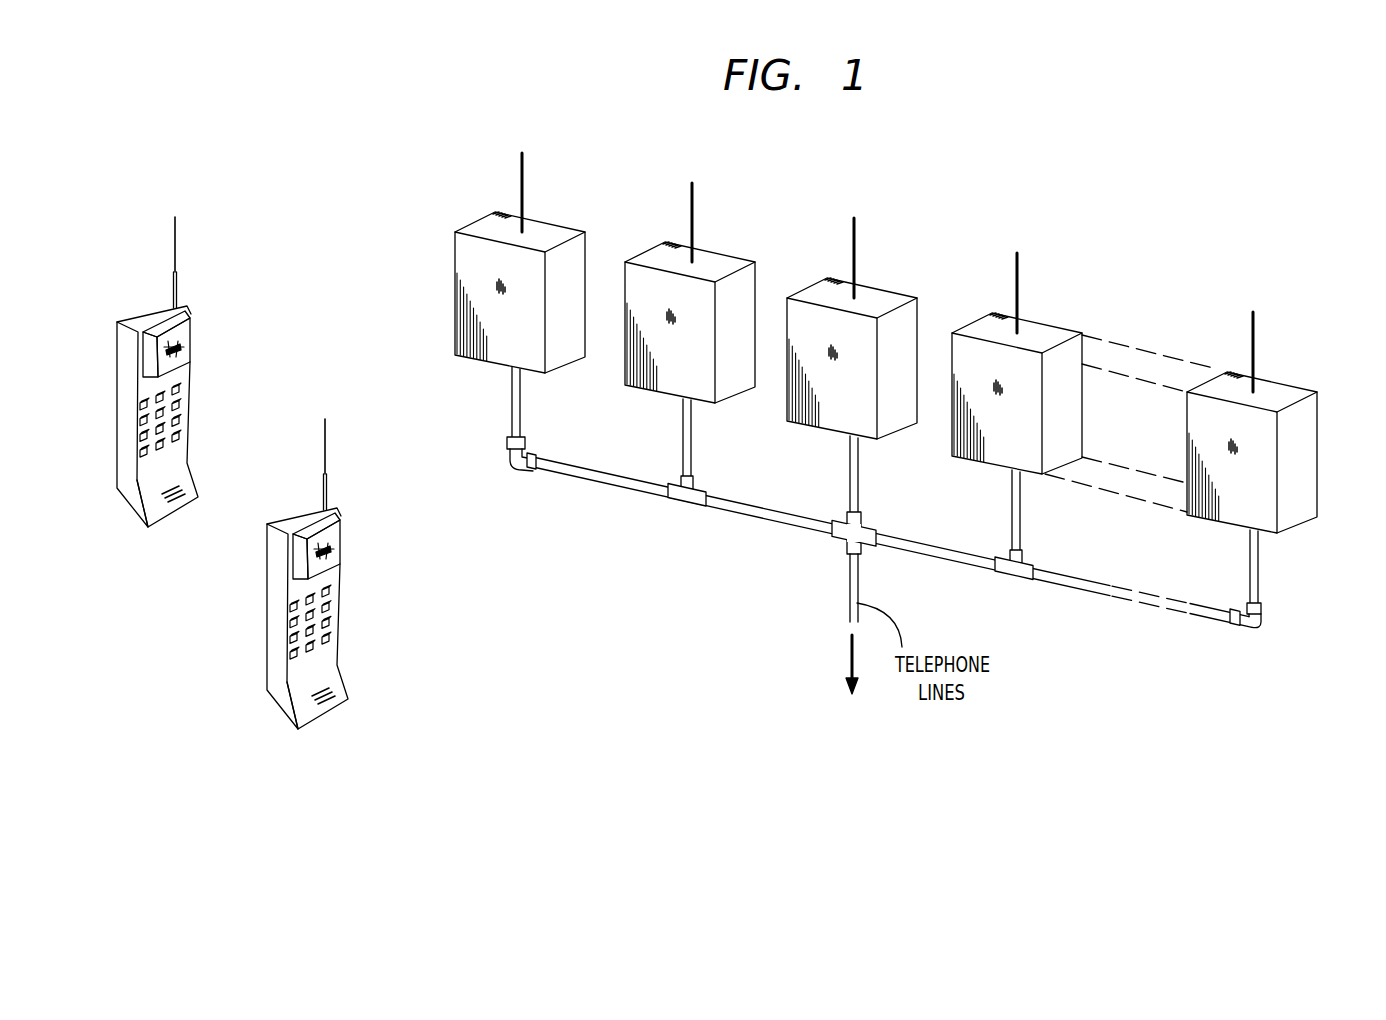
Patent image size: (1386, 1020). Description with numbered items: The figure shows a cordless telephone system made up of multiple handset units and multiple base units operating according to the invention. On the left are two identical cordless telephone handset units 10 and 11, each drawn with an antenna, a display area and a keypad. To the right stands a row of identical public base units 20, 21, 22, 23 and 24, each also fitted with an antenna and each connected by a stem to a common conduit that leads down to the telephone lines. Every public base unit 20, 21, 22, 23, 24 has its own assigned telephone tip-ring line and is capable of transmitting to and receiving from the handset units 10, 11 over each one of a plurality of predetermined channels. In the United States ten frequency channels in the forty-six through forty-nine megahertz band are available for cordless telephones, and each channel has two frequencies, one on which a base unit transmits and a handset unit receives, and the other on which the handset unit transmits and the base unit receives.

The cordless telephone handset unit 10 is at (197, 335).
The cordless telephone handset unit 11 is at (345, 553).
The public base unit 20 is at (540, 222).
The public base unit 21 is at (717, 252).
The public base unit 22 is at (880, 290).
The public base unit 23 is at (1043, 322).
The public base unit 24 is at (1283, 383).